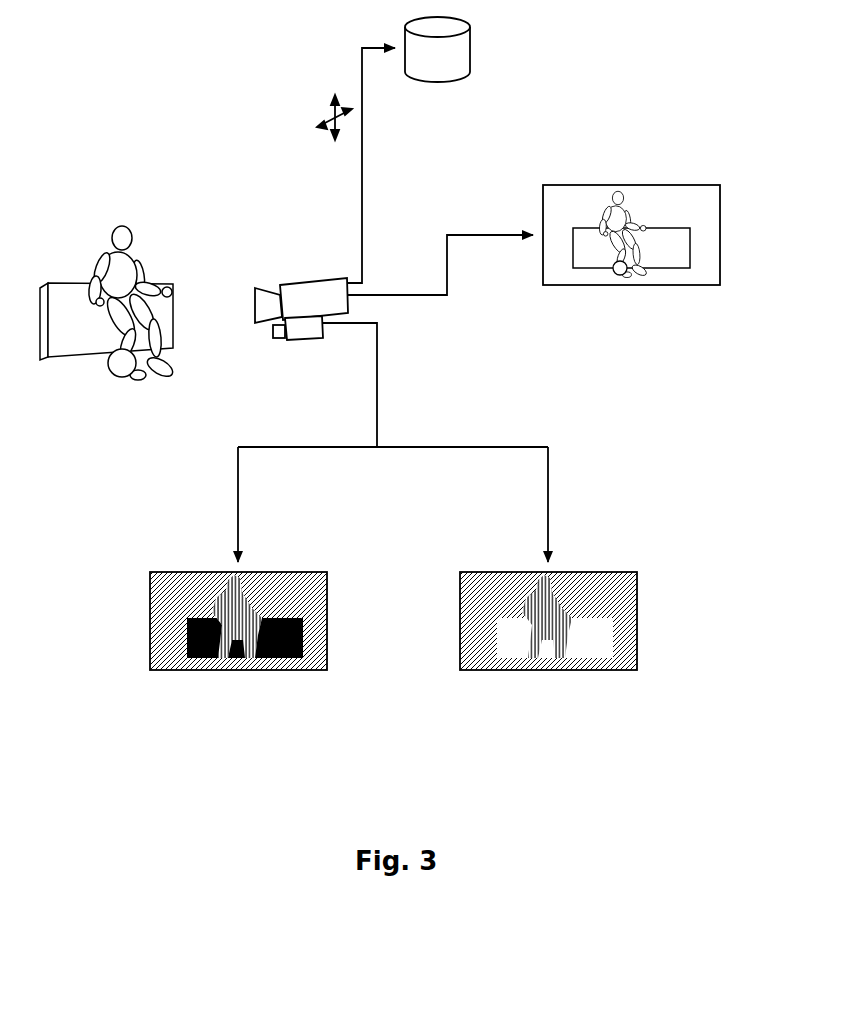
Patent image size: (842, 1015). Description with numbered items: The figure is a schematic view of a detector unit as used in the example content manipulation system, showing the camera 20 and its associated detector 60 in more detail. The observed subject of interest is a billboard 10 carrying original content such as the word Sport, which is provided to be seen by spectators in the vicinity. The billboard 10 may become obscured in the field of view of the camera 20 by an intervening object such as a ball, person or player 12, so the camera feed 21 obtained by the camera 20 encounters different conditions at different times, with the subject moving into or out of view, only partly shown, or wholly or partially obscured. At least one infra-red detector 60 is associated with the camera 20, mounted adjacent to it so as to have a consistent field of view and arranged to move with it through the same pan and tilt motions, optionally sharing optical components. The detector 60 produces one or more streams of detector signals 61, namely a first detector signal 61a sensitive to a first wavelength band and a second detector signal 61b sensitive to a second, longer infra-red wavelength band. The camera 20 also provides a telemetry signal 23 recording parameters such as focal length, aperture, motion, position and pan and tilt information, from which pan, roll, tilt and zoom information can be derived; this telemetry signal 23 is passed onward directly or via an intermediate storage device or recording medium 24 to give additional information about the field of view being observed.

The billboard 10 is at (173, 347).
The player 12 is at (132, 376).
The camera 20 is at (305, 282).
The infra-red detector 60 is at (303, 338).
The detector signals 61 is at (377, 343).
The first detector signal 61a is at (327, 610).
The second detector signal 61b is at (637, 632).
The camera feed 21 is at (447, 283).
The telemetry signal 23 is at (362, 145).
The intermediate storage device 24 is at (470, 47).